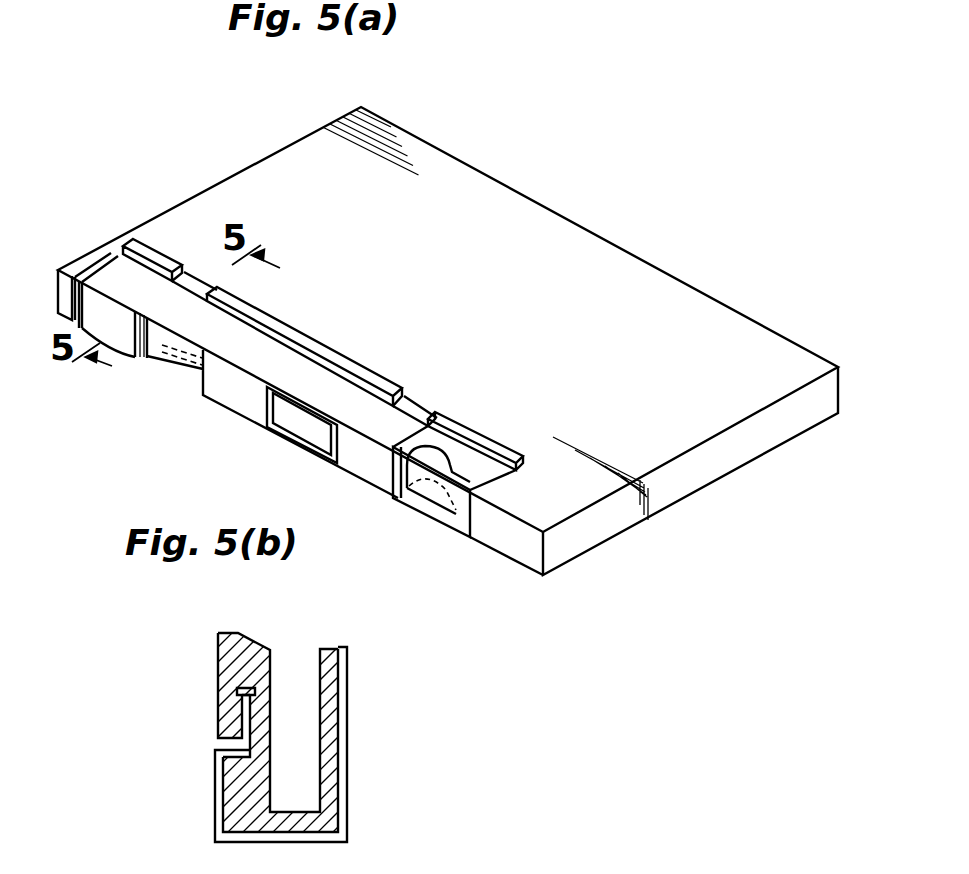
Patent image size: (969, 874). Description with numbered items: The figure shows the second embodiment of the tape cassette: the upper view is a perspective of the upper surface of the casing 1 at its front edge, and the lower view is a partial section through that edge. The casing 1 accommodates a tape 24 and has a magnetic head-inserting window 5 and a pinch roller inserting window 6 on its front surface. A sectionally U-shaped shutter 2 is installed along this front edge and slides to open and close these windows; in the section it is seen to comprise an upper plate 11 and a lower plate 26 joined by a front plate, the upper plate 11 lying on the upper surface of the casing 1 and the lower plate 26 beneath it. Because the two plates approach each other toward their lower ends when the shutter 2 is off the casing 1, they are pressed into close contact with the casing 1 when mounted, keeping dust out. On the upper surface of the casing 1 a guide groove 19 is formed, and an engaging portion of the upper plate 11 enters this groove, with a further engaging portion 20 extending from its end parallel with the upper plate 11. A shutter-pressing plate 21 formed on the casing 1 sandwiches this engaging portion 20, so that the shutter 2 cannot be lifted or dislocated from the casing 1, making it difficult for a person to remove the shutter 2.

In FIG. 5A, the casing 1 is at (478, 182).
In FIG. 5B, the casing 1 is at (228, 648).
In FIG. 5A, the shutter 2 is at (383, 427).
In FIG. 5A, the magnetic head-inserting window 5 is at (290, 434).
In FIG. 5A, the pinch roller inserting window 6 is at (435, 496).
In FIG. 5B, the upper plate 11 is at (215, 795).
In FIG. 5A, the guide groove 19 is at (495, 465).
In FIG. 5B, the guide groove 19 is at (238, 690).
In FIG. 5A, the engaging portion 20 is at (337, 370).
In FIG. 5B, the engaging portion 20 is at (240, 743).
In FIG. 5A, the shutter-pressing plate 21 is at (190, 283).
In FIG. 5B, the shutter-pressing plate 21 is at (228, 710).
In FIG. 5A, the tape 24 is at (455, 514).
In FIG. 5B, the lower plate 26 is at (350, 763).